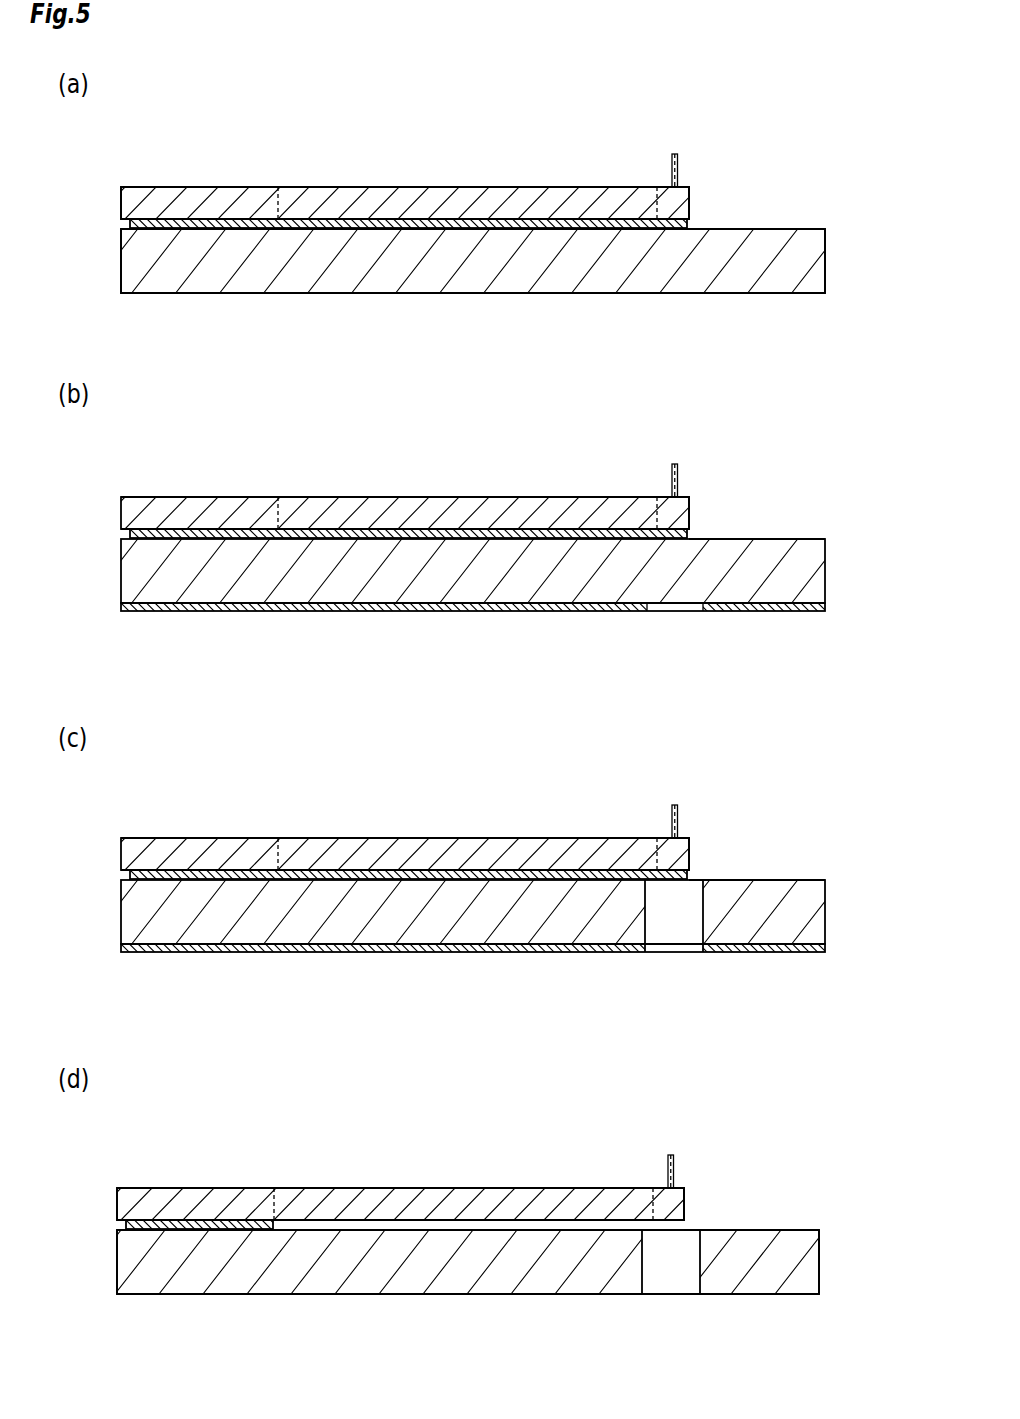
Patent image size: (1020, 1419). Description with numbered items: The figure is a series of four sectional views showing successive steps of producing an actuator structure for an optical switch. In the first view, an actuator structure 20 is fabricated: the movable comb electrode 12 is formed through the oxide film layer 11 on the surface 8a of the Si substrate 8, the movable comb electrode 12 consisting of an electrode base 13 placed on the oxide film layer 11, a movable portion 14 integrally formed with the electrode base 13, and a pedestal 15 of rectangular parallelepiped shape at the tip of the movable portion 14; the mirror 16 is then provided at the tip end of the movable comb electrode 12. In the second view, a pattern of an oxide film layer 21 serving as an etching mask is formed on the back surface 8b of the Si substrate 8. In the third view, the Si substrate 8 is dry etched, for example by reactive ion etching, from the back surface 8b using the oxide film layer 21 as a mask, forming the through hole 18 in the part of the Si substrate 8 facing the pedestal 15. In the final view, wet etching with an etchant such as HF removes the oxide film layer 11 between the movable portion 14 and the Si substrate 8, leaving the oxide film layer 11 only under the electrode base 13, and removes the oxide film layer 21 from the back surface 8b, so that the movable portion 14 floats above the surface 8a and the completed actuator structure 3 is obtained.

The actuator structure 3 is at (773, 1159).
The Si substrate 8 is at (763, 283).
The surface of the Si substrate 8a is at (791, 230).
The back surface of the Si substrate 8b is at (523, 294).
The oxide film layer 11 is at (205, 222).
The movable comb electrode 12 is at (372, 185).
The electrode base 13 is at (248, 196).
The movable portion 14 is at (465, 198).
The pedestal 15 is at (684, 205).
The mirror 16 is at (670, 169).
The through hole 18 is at (674, 926).
The actuator structure 20 is at (582, 150).
The oxide film layer 21 is at (413, 606).